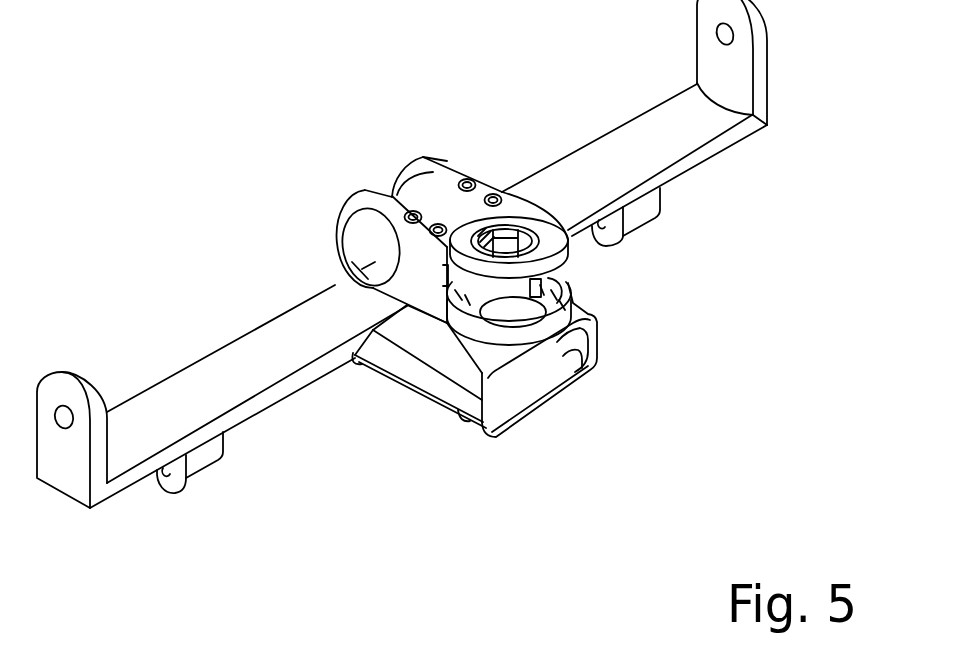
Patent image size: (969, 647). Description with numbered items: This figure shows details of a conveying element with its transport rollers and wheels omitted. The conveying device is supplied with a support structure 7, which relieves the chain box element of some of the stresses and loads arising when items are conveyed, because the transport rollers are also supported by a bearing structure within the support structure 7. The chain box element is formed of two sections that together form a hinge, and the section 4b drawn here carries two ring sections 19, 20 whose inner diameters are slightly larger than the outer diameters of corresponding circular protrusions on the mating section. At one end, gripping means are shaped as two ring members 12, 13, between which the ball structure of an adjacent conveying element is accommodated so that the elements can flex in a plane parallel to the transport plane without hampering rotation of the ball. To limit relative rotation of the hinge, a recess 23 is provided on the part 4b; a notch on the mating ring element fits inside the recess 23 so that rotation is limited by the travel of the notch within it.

The chain box element section 4b is at (429, 101).
The support structure 7 is at (667, 168).
The ring member 12 is at (584, 262).
The ring member 13 is at (586, 324).
The ring section 19 is at (391, 146).
The ring section 20 is at (328, 185).
The recess 23 is at (341, 240).